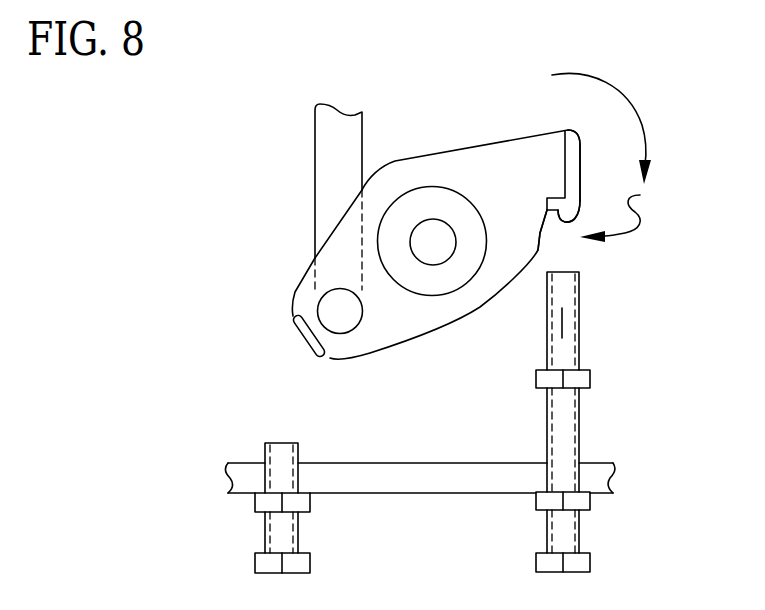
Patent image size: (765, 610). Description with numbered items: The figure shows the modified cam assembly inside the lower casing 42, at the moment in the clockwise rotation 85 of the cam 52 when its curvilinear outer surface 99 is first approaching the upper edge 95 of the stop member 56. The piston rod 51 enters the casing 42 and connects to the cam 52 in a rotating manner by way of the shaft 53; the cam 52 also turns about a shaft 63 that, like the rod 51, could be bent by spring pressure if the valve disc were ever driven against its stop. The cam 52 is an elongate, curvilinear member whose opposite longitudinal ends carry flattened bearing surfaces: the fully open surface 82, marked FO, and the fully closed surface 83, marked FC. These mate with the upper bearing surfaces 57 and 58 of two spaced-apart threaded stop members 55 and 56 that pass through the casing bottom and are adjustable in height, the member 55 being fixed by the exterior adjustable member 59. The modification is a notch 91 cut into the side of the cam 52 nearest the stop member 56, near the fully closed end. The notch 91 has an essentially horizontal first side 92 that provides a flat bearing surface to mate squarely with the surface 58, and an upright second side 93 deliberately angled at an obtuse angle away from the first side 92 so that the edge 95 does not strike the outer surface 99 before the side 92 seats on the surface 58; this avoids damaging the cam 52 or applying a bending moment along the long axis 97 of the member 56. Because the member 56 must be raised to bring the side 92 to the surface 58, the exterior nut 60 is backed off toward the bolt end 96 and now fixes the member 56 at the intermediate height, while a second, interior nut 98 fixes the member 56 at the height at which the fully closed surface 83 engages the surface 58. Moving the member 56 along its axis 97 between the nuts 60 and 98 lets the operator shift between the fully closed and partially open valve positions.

The casing 42 is at (443, 494).
The piston rod 51 is at (362, 143).
The cam 52 is at (453, 177).
The shaft 53 is at (335, 303).
The stop member 55 is at (265, 527).
The stop member 56 is at (547, 412).
The upper bearing surface 57 is at (275, 443).
The upper bearing surface 58 is at (563, 272).
The adjustable member 59 is at (255, 502).
The adjustable member 60 is at (590, 500).
The shaft 63 is at (430, 242).
The fully open surface 82 is at (316, 349).
The fully closed surface 83 is at (580, 150).
The arrow 85 is at (618, 83).
The notch 91 is at (640, 195).
The first side 92 is at (580, 206).
The second side 93 is at (545, 232).
The upper edge 95 is at (547, 272).
The bolt end 96 is at (587, 572).
The long axis 97 is at (562, 318).
The second adjustable member 98 is at (588, 388).
The outer surface 99 is at (445, 330).
The fully closed surface FC is at (565, 163).
The pivot contact PC is at (565, 195).
The fully open surface FO is at (318, 333).